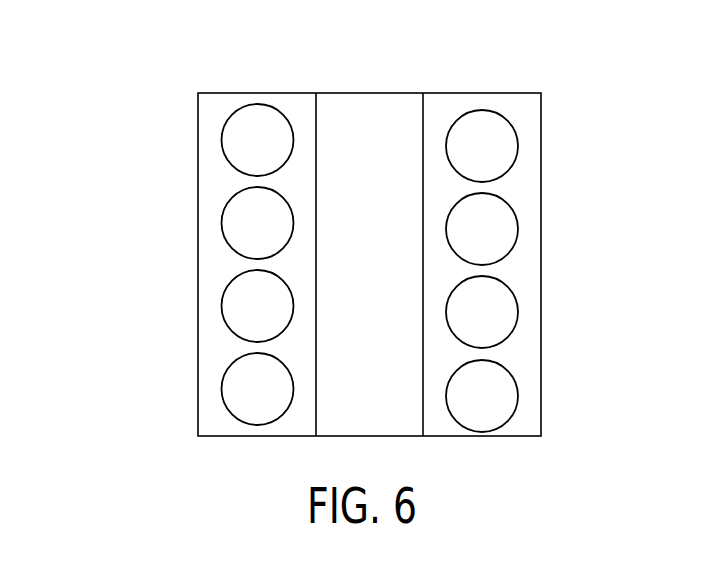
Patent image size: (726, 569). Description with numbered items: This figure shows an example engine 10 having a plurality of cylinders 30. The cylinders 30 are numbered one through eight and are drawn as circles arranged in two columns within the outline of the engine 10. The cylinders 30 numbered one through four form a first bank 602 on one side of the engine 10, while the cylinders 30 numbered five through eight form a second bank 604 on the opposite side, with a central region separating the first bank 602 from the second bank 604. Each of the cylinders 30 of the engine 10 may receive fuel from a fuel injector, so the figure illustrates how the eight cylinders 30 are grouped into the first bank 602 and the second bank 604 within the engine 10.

The engine 10 is at (137, 91).
The cylinders 30 is at (240, 127).
The first bank 602 is at (232, 69).
The second bank 604 is at (506, 68).